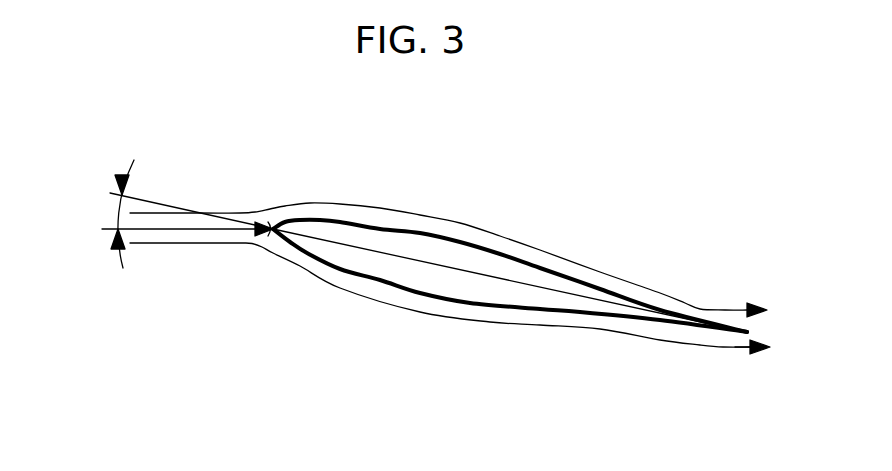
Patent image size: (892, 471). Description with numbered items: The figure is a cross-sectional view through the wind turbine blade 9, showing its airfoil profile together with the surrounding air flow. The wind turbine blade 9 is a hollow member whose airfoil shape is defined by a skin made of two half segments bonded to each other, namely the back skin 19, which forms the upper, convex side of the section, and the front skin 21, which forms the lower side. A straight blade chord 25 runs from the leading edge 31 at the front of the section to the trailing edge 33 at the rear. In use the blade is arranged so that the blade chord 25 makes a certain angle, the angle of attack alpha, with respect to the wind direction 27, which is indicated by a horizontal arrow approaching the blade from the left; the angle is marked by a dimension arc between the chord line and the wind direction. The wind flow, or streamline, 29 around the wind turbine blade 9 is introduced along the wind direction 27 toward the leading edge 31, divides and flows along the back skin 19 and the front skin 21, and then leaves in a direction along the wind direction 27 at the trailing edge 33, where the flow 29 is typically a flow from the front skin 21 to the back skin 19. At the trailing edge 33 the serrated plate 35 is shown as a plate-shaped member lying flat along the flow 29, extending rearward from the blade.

The wind turbine blade 9 is at (496, 236).
The back skin 19 is at (497, 250).
The front skin 21 is at (470, 304).
The blade chord 25 is at (373, 251).
The wind direction 27 is at (203, 230).
The wind flow (streamline) 29 is at (664, 341).
The leading edge 31 is at (280, 223).
The trailing edge 33 is at (706, 323).
The serrated plate 35 is at (722, 348).